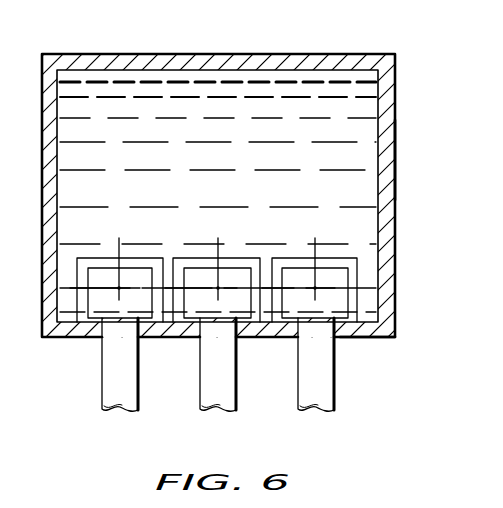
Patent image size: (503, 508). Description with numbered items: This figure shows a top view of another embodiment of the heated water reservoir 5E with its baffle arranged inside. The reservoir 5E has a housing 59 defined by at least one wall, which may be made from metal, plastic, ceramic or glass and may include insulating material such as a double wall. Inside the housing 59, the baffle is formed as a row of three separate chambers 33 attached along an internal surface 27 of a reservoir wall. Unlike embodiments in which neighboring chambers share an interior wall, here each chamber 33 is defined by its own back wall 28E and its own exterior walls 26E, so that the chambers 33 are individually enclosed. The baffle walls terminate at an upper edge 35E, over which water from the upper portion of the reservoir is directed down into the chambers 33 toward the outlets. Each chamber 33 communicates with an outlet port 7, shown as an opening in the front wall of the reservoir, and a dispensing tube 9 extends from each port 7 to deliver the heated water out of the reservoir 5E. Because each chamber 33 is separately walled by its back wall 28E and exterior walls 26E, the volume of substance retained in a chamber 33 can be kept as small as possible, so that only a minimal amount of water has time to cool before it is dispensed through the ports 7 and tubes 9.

The reservoir 5E is at (403, 86).
The housing 59 is at (396, 167).
The upper edge 35E is at (82, 268).
The back wall 28E is at (90, 268).
The exterior walls 26E is at (165, 278).
The chambers 33 is at (133, 278).
The internal surface 27 is at (362, 316).
The outlet ports 7 is at (97, 339).
The dispensing tubes 9 is at (113, 404).